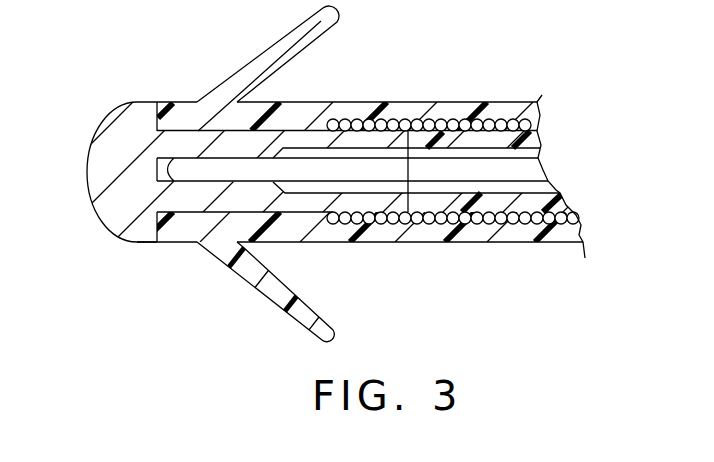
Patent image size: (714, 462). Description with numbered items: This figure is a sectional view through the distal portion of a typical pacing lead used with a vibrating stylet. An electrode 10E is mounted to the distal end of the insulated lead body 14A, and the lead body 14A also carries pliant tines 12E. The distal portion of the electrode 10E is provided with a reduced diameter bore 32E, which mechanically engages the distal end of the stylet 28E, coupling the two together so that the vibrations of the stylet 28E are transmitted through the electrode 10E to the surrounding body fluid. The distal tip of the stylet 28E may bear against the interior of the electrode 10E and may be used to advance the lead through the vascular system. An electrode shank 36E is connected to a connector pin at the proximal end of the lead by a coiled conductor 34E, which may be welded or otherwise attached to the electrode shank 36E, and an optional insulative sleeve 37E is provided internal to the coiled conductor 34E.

The electrode 10E is at (110, 152).
The pliant tines 12E is at (334, 16).
The insulated lead body 14A is at (310, 126).
The stylet 28E is at (490, 172).
The reduced diameter bore 32E is at (232, 182).
The coiled conductor 34E is at (380, 218).
The electrode shank 36E is at (297, 203).
The insulative sleeve 37E is at (541, 137).